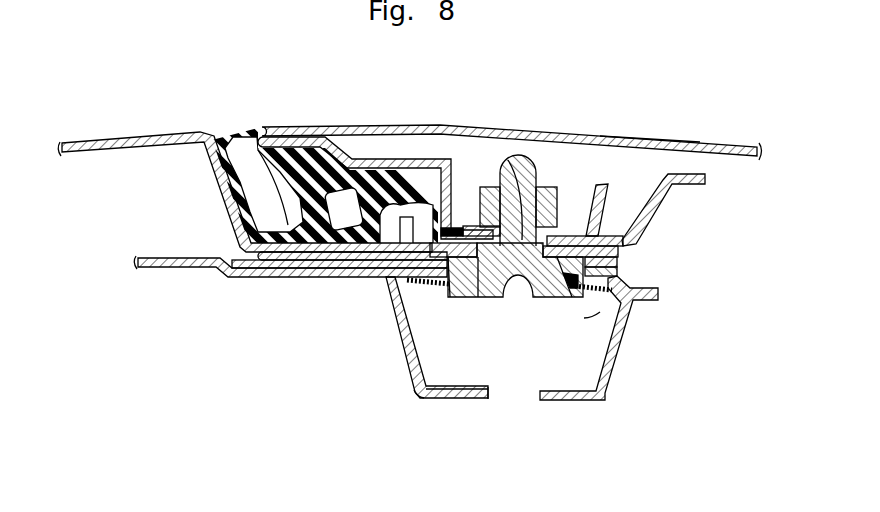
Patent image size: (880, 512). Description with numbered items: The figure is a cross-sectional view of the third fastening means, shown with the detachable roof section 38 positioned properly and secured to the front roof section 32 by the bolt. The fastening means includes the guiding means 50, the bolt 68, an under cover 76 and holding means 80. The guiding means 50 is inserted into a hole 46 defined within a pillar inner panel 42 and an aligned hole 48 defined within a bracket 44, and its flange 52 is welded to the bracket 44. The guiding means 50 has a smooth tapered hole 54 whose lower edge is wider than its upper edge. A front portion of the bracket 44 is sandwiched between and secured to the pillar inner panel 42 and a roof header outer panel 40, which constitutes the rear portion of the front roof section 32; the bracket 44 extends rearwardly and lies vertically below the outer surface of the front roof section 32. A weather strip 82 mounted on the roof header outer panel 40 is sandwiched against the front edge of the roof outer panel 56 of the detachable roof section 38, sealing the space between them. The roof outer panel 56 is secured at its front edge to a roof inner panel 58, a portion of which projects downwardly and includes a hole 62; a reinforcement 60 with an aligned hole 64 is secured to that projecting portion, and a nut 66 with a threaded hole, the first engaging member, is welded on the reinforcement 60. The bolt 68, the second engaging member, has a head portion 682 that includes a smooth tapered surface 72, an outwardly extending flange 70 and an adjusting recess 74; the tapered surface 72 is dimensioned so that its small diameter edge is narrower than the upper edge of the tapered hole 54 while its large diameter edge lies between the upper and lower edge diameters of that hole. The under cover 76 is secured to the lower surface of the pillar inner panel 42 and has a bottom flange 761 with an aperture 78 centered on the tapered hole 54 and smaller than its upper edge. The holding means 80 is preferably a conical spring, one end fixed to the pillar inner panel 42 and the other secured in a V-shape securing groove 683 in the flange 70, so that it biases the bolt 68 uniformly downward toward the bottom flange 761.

The front roof section 32 is at (116, 124).
The detachable roof section 38 is at (731, 133).
The roof header outer panel 40 is at (167, 130).
The pillar inner panel 42 is at (260, 270).
The bracket 44 is at (337, 270).
The hole 46 is at (583, 315).
The aligned hole 48 is at (577, 292).
The guiding means 50 is at (462, 293).
The flange 52 is at (618, 254).
The tapered hole 54 is at (592, 205).
The roof outer panel 56 is at (683, 143).
The roof inner panel 58 is at (700, 182).
The reinforcement 60 is at (424, 130).
The hole 62 is at (514, 160).
The aligned hole 64 is at (499, 155).
The nut 66 is at (565, 212).
The bolt 68 is at (630, 328).
The flange 70 is at (630, 312).
The tapered surface 72 is at (471, 226).
The adjusting recess 74 is at (517, 290).
The under cover 76 is at (481, 404).
The aperture 78 is at (490, 392).
The holding means 80 is at (406, 350).
The weather strip 82 is at (235, 128).
The head portion 682 is at (488, 298).
The V-shape securing groove 683 is at (442, 295).
The bottom flange 761 is at (437, 398).